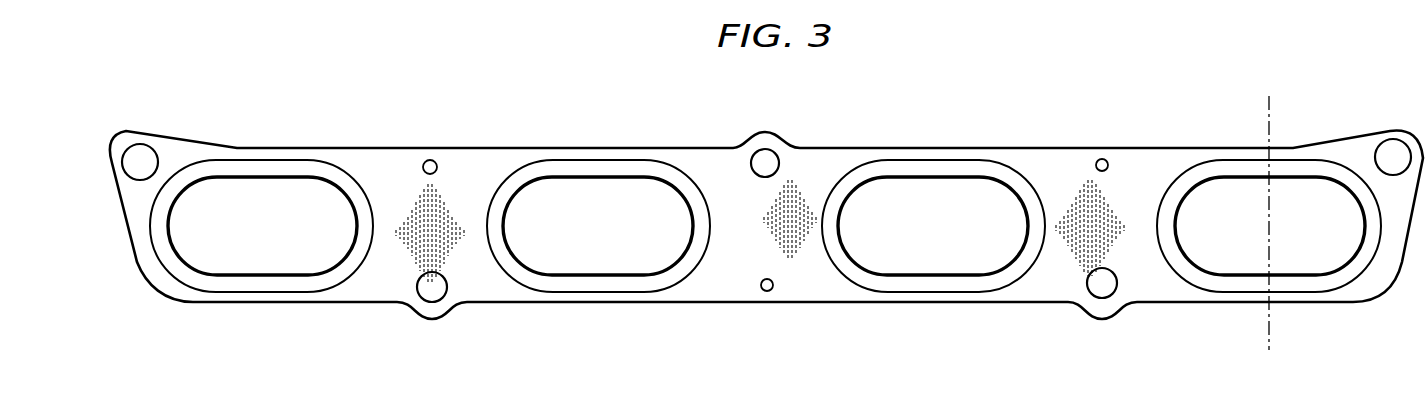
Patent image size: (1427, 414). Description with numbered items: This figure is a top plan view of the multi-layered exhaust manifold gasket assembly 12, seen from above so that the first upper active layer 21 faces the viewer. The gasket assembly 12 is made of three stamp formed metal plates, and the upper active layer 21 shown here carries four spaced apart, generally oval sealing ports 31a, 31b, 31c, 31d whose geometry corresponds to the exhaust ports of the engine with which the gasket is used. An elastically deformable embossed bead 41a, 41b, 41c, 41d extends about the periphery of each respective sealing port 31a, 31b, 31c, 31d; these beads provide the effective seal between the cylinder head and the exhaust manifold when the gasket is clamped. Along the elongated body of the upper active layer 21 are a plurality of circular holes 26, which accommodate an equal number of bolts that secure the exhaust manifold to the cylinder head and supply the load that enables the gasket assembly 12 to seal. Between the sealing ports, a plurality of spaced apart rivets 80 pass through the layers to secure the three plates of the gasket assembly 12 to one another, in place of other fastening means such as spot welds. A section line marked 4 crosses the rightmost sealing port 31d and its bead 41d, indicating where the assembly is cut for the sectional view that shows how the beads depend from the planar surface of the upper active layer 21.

The exhaust manifold gasket assembly 12 is at (853, 113).
The first upper active layer 21 is at (779, 237).
The circular holes 26 is at (153, 155).
The sealing port 31a is at (263, 178).
The sealing port 31b is at (578, 268).
The sealing port 31c is at (950, 179).
The sealing port 31d is at (1204, 268).
The embossed bead 41a is at (235, 278).
The embossed bead 41b is at (566, 168).
The embossed bead 41c is at (931, 278).
The embossed bead 41d is at (1222, 168).
The rivets 80 is at (436, 163).
The section line 4- 4 is at (1318, 350).